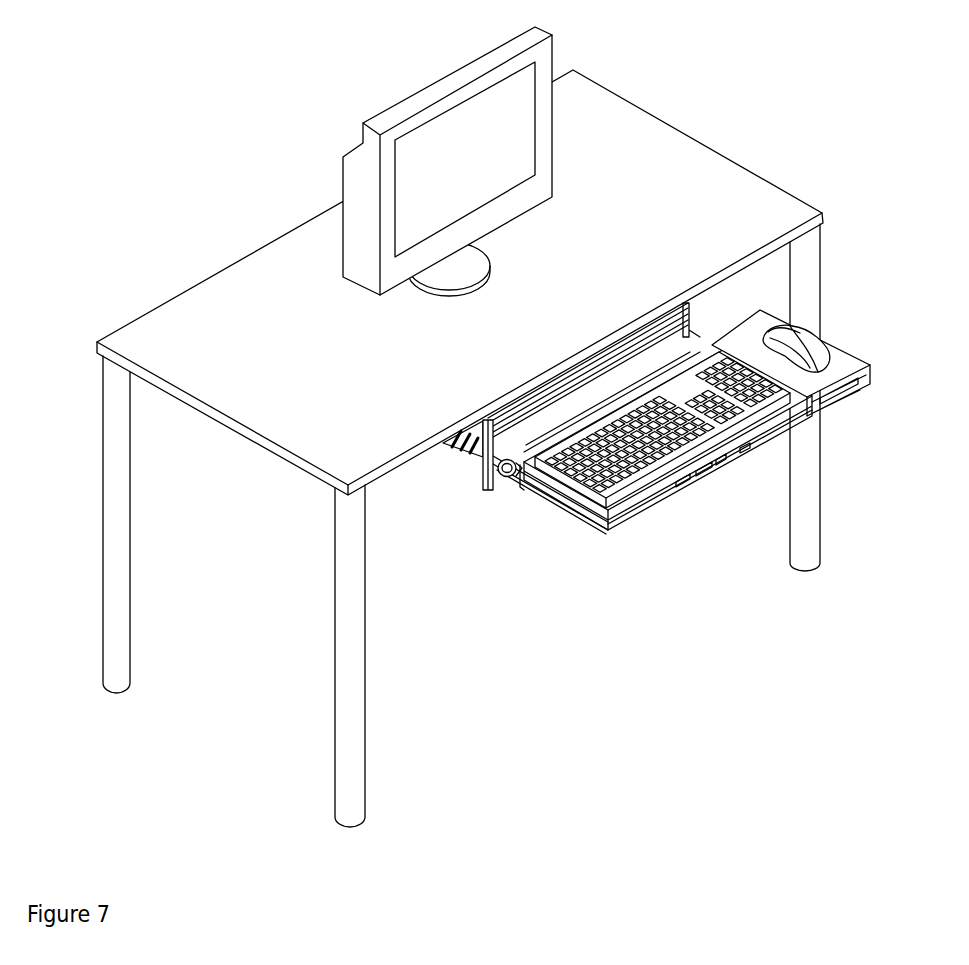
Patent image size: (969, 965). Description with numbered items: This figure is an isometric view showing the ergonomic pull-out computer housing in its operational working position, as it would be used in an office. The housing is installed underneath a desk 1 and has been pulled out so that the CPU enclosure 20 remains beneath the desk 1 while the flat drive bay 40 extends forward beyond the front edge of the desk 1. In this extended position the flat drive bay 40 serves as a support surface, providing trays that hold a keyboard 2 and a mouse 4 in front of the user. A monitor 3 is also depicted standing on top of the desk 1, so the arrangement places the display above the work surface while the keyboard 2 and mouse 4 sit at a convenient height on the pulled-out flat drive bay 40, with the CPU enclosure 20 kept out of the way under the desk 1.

The desk 1 is at (727, 190).
The keyboard 2 is at (735, 415).
The monitor 3 is at (545, 102).
The mouse 4 is at (812, 347).
The CPU enclosure 20 is at (447, 473).
The flat drive bay 40 is at (548, 507).